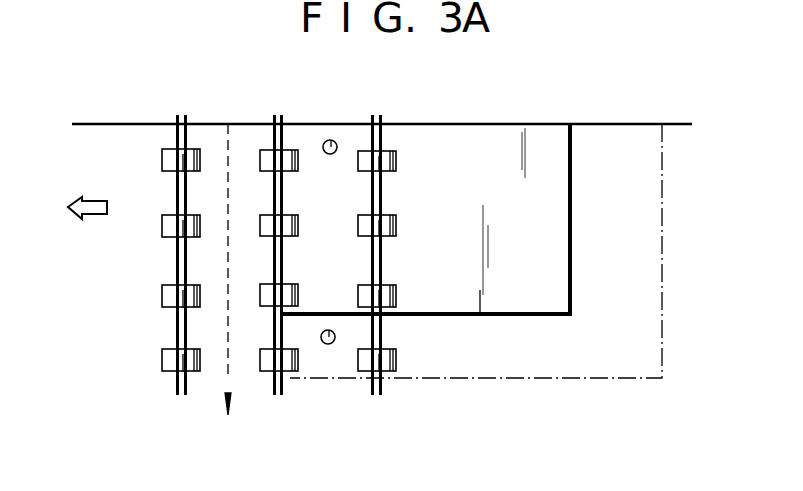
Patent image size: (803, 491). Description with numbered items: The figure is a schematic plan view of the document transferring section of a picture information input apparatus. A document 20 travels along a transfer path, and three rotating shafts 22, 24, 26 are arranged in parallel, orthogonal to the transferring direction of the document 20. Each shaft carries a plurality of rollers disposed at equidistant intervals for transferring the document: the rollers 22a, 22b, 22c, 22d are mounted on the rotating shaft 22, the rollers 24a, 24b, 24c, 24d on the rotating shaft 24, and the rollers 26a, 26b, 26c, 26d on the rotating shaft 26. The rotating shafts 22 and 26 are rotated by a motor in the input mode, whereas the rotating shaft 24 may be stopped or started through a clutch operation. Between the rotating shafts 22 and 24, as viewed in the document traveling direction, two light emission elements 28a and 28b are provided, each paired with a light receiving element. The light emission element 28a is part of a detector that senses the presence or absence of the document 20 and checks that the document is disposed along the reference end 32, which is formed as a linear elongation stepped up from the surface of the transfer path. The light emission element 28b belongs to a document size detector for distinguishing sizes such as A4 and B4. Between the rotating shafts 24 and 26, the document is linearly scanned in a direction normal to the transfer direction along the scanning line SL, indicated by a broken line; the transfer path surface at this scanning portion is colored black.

The document 20 is at (570, 252).
The rotating shaft 22 is at (378, 396).
The roller 22a is at (396, 360).
The roller 22b is at (396, 298).
The roller 22c is at (396, 228).
The roller 22d is at (396, 162).
The rotating shaft 24 is at (279, 396).
The roller 24a is at (283, 372).
The roller 24b is at (265, 306).
The roller 24c is at (265, 236).
The roller 24d is at (265, 171).
The rotating shaft 26 is at (181, 396).
The roller 26a is at (162, 360).
The roller 26b is at (162, 296).
The roller 26c is at (162, 229).
The roller 26d is at (162, 160).
The light emission element 28a is at (328, 154).
The light emission element 28b is at (326, 344).
The reference end 32 is at (611, 124).
The scanning line SL is at (226, 385).